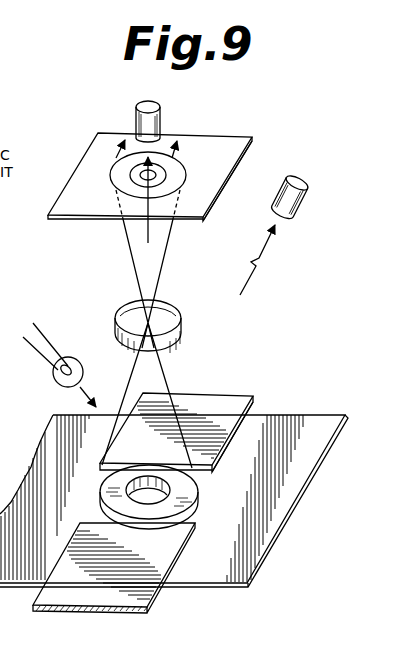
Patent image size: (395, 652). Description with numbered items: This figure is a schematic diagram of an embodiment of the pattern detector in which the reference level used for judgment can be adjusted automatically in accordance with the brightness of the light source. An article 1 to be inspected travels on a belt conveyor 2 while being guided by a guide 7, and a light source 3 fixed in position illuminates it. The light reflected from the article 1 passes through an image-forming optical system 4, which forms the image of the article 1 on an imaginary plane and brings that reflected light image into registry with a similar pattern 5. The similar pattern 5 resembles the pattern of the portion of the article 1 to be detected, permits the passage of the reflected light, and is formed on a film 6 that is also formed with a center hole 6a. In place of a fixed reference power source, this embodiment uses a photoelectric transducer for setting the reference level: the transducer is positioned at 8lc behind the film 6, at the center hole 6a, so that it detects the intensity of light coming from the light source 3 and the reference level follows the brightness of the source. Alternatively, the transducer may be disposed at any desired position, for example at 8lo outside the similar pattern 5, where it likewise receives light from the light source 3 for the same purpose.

The article 1 is at (194, 498).
The belt conveyor 2 is at (290, 415).
The light source 3 is at (75, 359).
The image-forming optical system 4 is at (179, 323).
The similar pattern 5 is at (186, 175).
The film 6 is at (112, 138).
The center hole 6a is at (140, 175).
The guide 7 is at (148, 590).
The transducer position behind the film 8lc is at (162, 116).
The transducer position outside the similar pattern 8lo is at (296, 213).